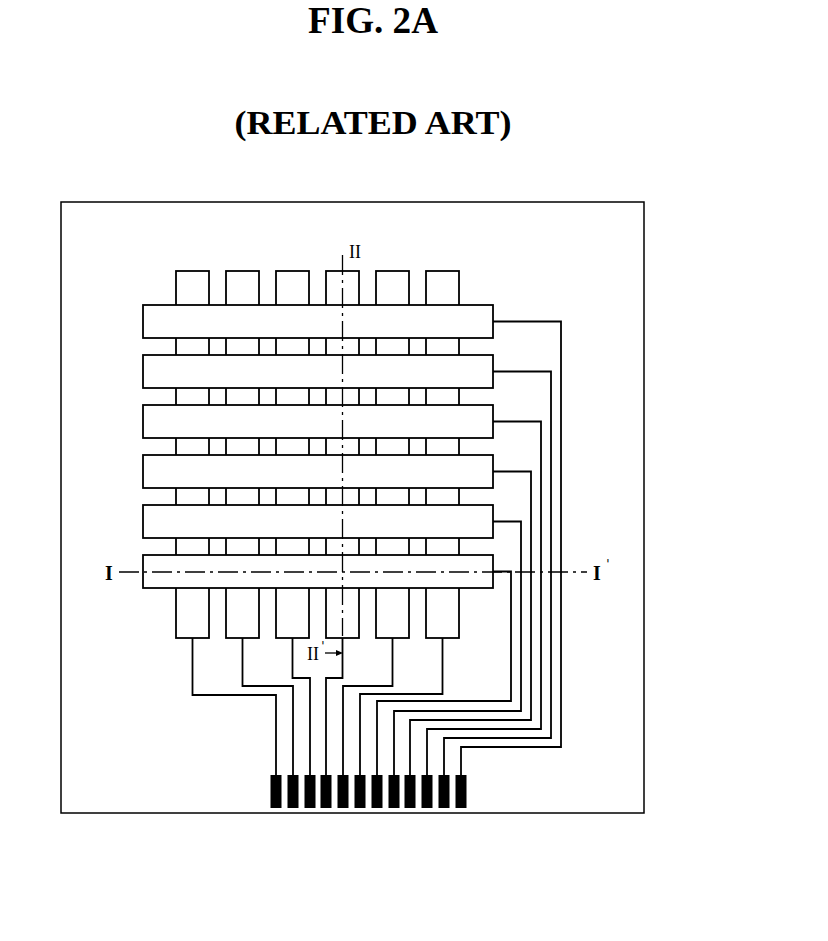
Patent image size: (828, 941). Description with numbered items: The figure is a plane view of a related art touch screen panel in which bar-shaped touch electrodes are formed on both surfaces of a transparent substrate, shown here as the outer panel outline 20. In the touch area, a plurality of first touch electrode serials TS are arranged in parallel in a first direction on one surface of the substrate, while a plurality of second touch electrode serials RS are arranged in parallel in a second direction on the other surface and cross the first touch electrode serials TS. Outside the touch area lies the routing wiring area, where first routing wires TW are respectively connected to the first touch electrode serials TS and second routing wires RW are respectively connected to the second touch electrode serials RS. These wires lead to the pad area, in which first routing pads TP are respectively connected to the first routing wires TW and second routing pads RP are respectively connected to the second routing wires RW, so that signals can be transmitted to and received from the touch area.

The second touch electrode serials RS is at (194, 279).
The first touch electrode serials TS is at (152, 321).
The first routing wires TW is at (575, 658).
The second routing wires RW is at (270, 749).
The second routing pads RP is at (271, 822).
The first routing pads TP is at (387, 822).
The touch sensor panel 20 is at (584, 800).